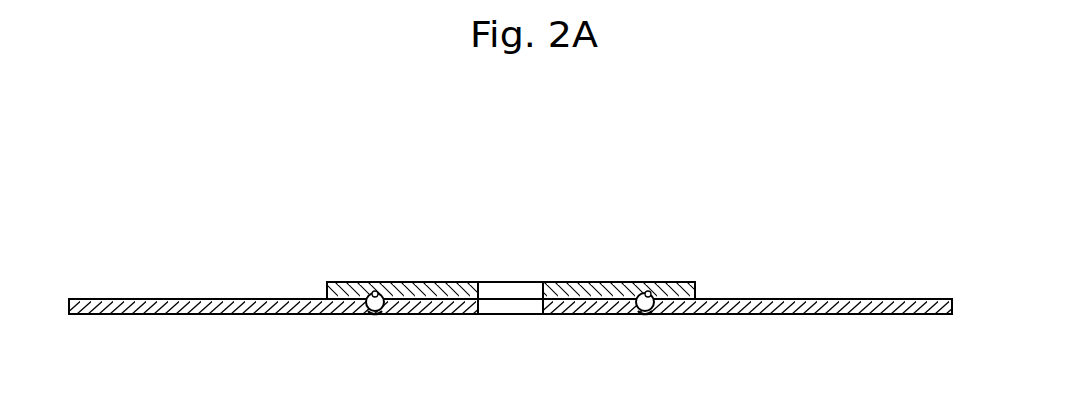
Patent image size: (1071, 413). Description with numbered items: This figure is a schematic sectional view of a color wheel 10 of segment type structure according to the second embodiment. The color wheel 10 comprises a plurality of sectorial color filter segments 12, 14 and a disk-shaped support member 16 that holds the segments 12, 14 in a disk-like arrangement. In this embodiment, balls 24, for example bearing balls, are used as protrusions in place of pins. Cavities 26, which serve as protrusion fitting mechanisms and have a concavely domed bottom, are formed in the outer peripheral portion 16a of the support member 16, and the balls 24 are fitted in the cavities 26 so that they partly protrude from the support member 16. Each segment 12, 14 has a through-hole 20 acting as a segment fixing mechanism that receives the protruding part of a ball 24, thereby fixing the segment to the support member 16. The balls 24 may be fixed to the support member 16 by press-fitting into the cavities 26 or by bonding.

The color wheel 10 is at (816, 224).
The color filter segment 12 is at (174, 299).
The color filter segment 14 is at (900, 299).
The support member 16 is at (568, 276).
The outer peripheral portion 16a is at (690, 282).
The through-hole 20 is at (370, 312).
The ball 24 is at (380, 312).
The cavity 26 is at (374, 291).